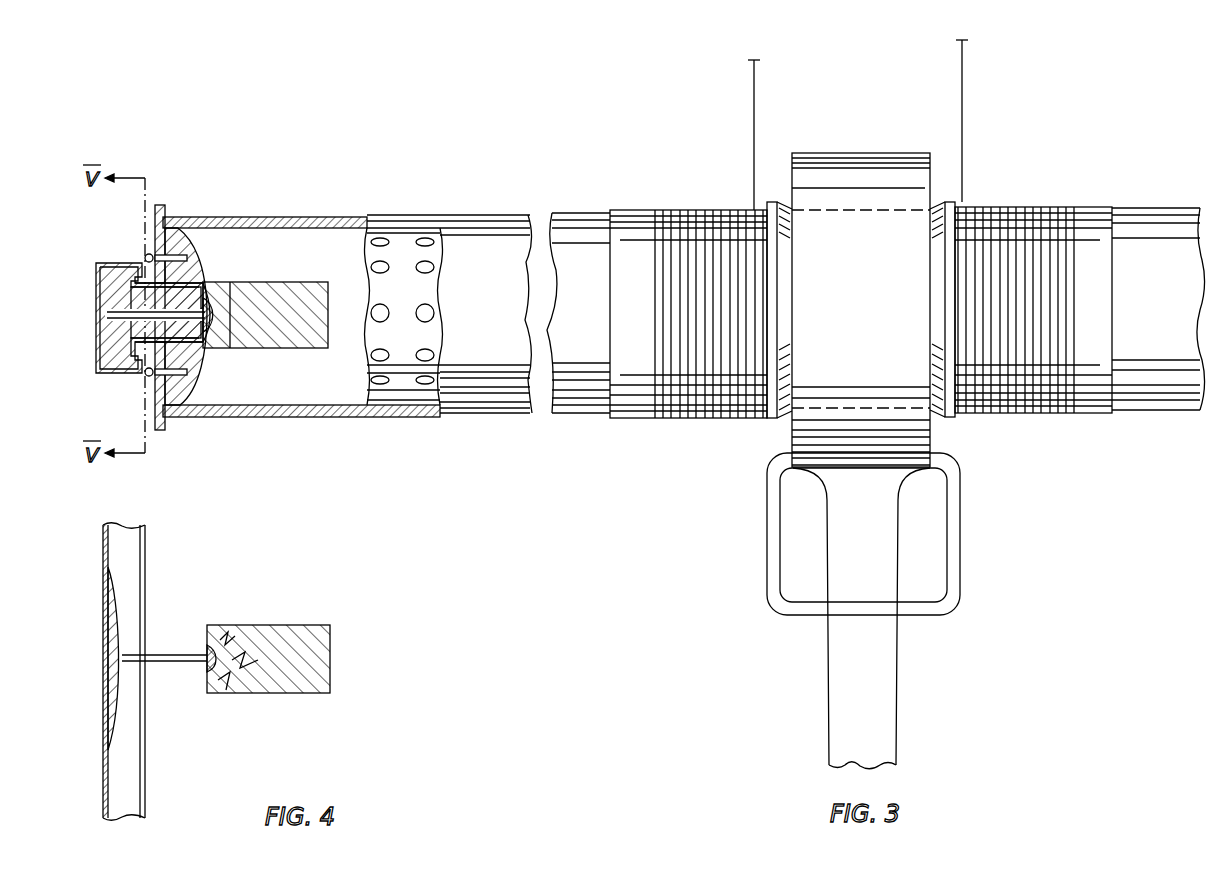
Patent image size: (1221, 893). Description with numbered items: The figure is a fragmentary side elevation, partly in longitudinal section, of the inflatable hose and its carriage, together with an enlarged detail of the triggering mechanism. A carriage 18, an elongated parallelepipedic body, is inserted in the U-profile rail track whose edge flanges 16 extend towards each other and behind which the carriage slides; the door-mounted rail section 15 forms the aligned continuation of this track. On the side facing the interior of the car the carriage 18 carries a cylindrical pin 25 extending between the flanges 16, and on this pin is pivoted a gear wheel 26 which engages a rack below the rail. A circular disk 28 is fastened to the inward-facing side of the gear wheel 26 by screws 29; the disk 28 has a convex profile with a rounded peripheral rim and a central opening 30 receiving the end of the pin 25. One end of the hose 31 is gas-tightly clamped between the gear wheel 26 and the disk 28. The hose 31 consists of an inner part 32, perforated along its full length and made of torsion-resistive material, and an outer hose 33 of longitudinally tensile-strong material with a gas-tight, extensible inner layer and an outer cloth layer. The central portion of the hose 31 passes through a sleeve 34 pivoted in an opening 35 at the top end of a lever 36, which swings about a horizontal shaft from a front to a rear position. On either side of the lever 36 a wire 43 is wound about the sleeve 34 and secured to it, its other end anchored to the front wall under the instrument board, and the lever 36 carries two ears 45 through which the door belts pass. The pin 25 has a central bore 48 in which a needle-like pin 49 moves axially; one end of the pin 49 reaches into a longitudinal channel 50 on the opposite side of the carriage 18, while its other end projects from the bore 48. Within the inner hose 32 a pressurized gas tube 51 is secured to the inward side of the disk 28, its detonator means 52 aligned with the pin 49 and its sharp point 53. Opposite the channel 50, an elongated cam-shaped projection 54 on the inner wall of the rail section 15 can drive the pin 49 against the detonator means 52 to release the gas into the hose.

In FIG. 4, the rail section 15 is at (135, 762).
In FIG. 3, the edge flanges 16 is at (150, 258).
In FIG. 3, the carriage 18 is at (131, 318).
In FIG. 3, the cylindrical pin 25 is at (190, 299).
In FIG. 3, the gear wheel 26 is at (165, 216).
In FIG. 3, the circular disk 28 is at (196, 380).
In FIG. 3, the screws 29 is at (150, 393).
In FIG. 3, the central opening 30 is at (205, 342).
In FIG. 3, the hose 31 is at (293, 208).
In FIG. 3, the inner part 32 is at (398, 228).
In FIG. 3, the outer hose 33 is at (472, 221).
In FIG. 3, the sleeve 34 is at (633, 213).
In FIG. 3, the opening 35 is at (812, 216).
In FIG. 3, the lever 36 is at (896, 665).
In FIG. 3, the wire 43 is at (754, 88).
In FIG. 3, the ears 45 is at (767, 517).
In FIG. 3, the central bore 48 is at (106, 331).
In FIG. 3, the needle-like pin 49 is at (107, 315).
In FIG. 4, the needle-like pin 49 is at (168, 663).
In FIG. 3, the channel 50 is at (97, 301).
In FIG. 3, the pressurized gas tube 51 is at (319, 291).
In FIG. 4, the pressurized gas tube 51 is at (330, 669).
In FIG. 3, the detonator means 52 is at (214, 306).
In FIG. 4, the detonator means 52 is at (210, 650).
In FIG. 3, the sharp point 53 is at (236, 346).
In FIG. 4, the cam-shaped projection 54 is at (122, 721).